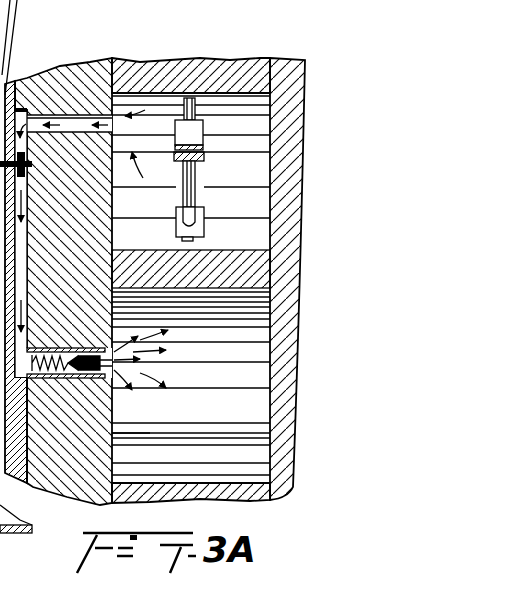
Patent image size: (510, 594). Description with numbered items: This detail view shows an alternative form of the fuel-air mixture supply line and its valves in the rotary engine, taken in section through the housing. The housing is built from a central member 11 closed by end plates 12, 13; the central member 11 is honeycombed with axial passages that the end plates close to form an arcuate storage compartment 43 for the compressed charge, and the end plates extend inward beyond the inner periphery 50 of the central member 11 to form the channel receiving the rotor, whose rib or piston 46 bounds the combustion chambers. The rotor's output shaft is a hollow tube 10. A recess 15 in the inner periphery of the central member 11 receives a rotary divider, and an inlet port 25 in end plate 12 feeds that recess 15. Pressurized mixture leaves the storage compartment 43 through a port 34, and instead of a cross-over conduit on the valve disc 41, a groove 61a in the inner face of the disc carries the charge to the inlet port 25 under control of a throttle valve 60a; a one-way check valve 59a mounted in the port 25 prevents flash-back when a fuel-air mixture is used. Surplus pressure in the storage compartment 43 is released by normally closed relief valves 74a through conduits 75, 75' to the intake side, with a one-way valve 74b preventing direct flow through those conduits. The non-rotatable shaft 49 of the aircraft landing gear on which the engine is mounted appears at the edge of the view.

The hollow tube 10 is at (0, 547).
The central member 11 is at (202, 77).
The end plate 12 is at (88, 72).
The end plate 13 is at (278, 63).
The recess 15 is at (225, 293).
The inlet port 25 is at (122, 380).
The port 34 is at (85, 120).
The valve disc 41 is at (22, 465).
The storage compartment 43 is at (243, 117).
The rotor piston 46 is at (192, 497).
The non-rotatable shaft 49 is at (8, 32).
The inner periphery 50 is at (213, 423).
The one-way check valve 59a is at (115, 433).
The throttle valve 60a is at (27, 173).
The groove 61a is at (18, 263).
The pressure relief valve 74a is at (200, 210).
The one-way valve 74b is at (203, 137).
The conduit 75 is at (173, 186).
The conduit 75' is at (217, 189).